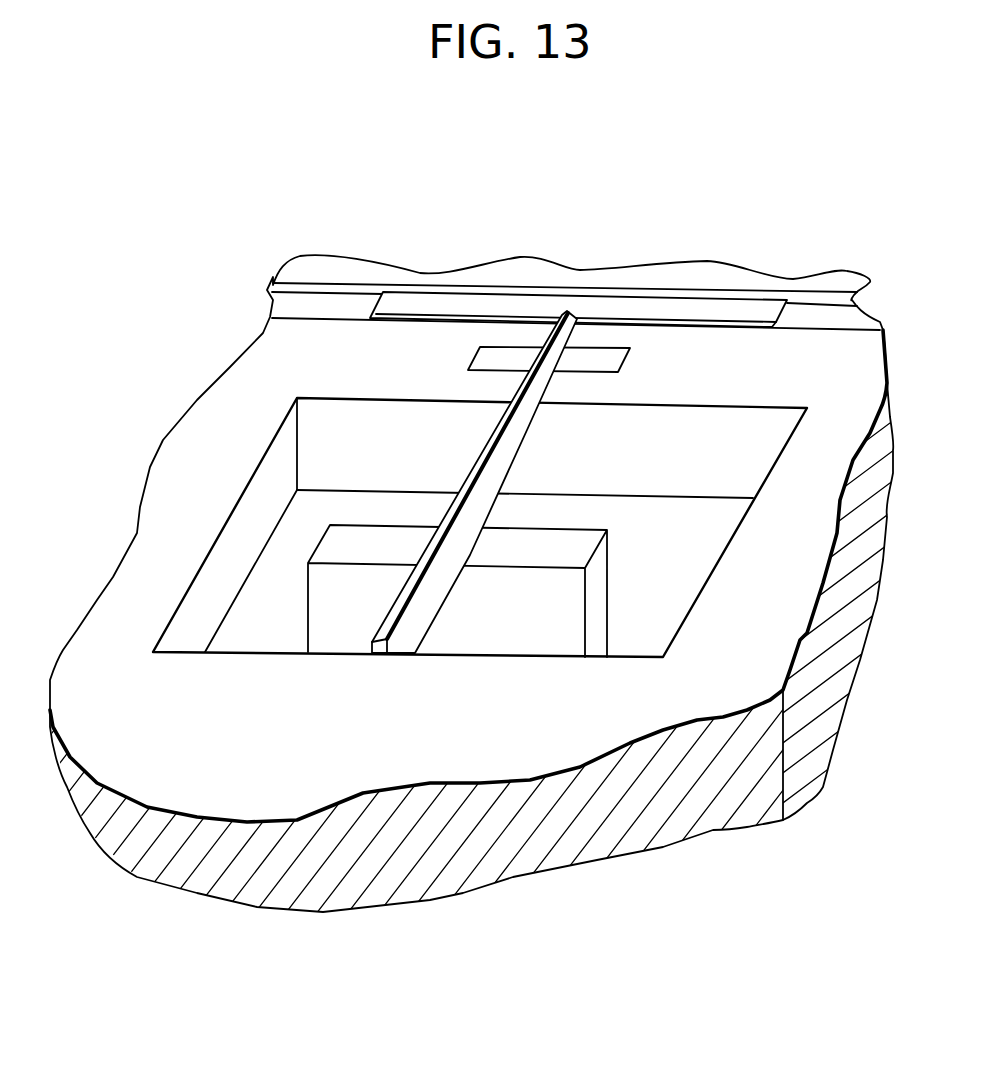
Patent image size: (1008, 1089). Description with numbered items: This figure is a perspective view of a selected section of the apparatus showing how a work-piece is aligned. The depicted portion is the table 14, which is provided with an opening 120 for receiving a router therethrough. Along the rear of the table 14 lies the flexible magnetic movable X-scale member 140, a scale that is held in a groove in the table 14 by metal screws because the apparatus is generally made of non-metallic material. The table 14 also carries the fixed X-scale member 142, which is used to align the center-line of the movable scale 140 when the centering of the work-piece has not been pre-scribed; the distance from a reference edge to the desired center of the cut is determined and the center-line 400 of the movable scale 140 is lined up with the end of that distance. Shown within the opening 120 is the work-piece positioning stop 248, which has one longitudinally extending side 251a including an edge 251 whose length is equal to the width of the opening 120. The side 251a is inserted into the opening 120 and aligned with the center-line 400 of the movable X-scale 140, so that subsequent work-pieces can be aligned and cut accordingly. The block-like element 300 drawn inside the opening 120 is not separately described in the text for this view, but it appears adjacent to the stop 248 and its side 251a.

The table 14 is at (291, 362).
The opening 120 is at (295, 533).
The flexible magnetic movable X-scale member 140 is at (746, 298).
The fixed X-scale member 142 is at (478, 349).
The work-piece positioning stop 248 is at (463, 543).
The edge 251 is at (517, 463).
The longitudinally extending side 251a is at (412, 618).
The block 300 is at (580, 548).
The center-line 400 is at (580, 308).